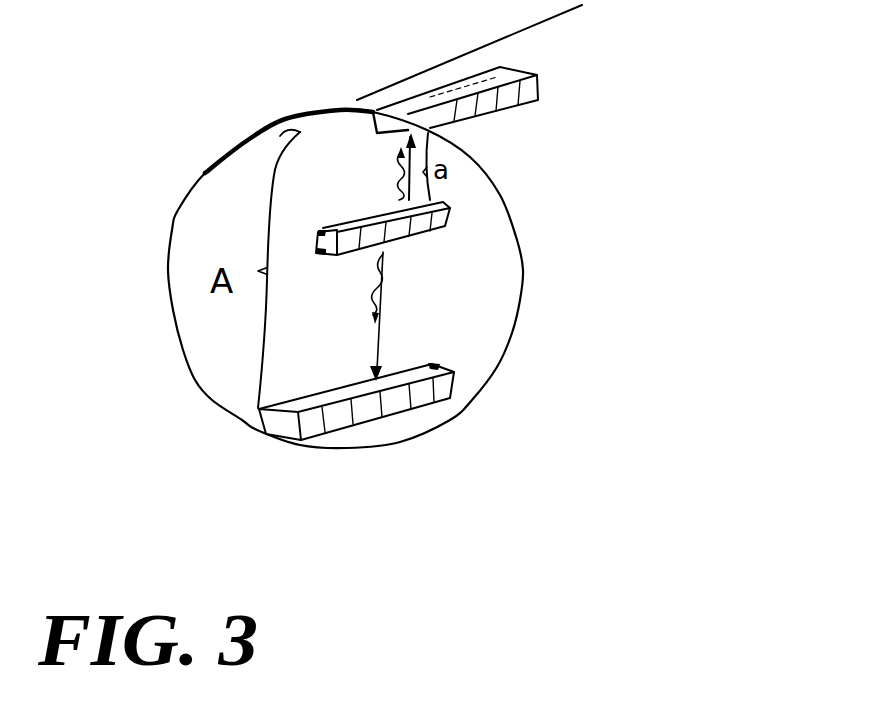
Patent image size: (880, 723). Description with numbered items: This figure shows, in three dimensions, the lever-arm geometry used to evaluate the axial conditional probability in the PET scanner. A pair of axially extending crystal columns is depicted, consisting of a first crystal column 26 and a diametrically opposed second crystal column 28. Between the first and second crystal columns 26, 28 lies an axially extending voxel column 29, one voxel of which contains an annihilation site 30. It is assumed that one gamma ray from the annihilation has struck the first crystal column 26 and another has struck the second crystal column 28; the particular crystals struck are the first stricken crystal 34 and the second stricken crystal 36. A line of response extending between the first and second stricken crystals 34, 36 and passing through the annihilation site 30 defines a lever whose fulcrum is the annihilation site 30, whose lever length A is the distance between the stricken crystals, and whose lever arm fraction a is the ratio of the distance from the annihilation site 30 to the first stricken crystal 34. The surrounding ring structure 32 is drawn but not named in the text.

The first crystal column 26 is at (453, 115).
The second crystal column 28 is at (278, 428).
The voxel column 29 is at (316, 237).
The annihilation site 30 is at (364, 243).
The ring 32 is at (360, 210).
The first stricken crystal 34 is at (437, 88).
The second stricken crystal 36 is at (413, 400).